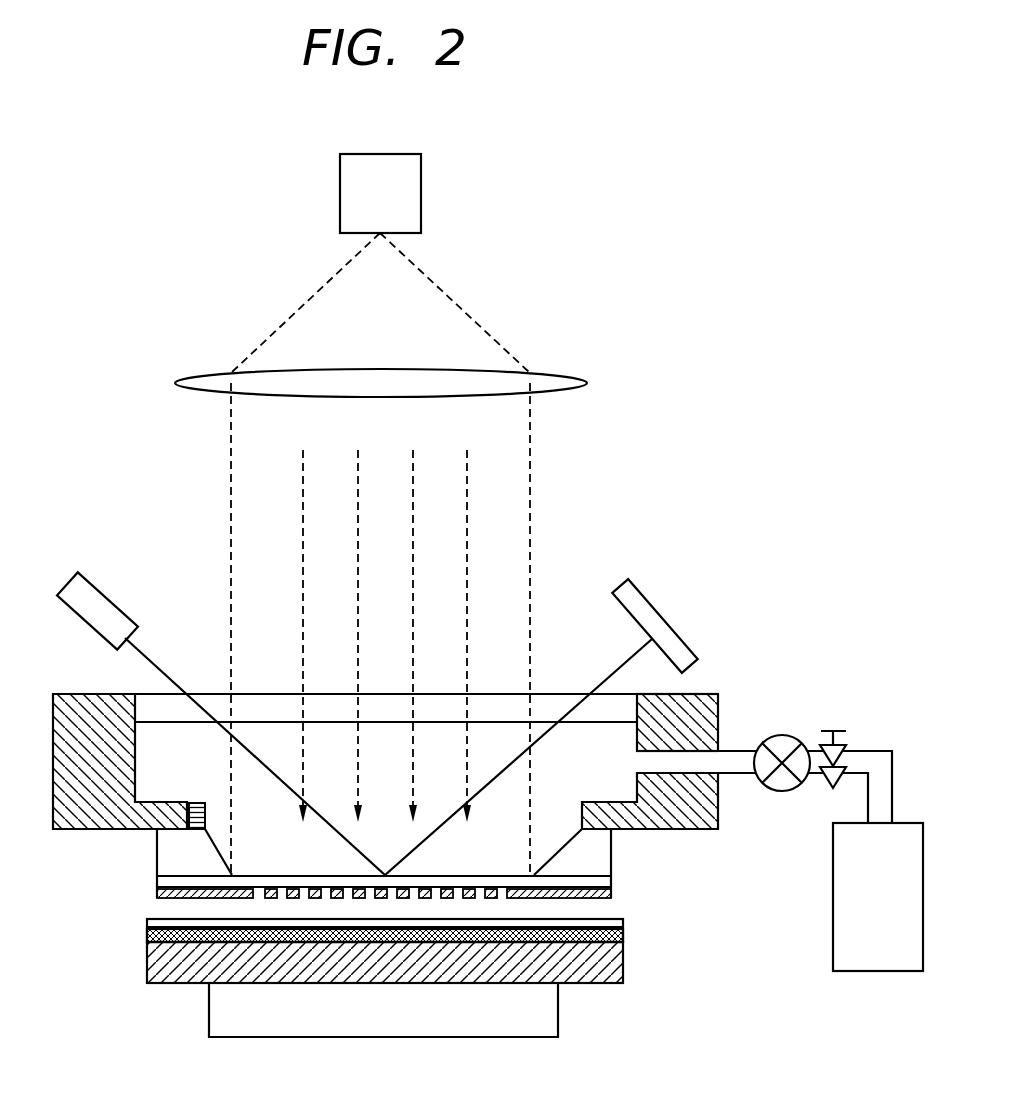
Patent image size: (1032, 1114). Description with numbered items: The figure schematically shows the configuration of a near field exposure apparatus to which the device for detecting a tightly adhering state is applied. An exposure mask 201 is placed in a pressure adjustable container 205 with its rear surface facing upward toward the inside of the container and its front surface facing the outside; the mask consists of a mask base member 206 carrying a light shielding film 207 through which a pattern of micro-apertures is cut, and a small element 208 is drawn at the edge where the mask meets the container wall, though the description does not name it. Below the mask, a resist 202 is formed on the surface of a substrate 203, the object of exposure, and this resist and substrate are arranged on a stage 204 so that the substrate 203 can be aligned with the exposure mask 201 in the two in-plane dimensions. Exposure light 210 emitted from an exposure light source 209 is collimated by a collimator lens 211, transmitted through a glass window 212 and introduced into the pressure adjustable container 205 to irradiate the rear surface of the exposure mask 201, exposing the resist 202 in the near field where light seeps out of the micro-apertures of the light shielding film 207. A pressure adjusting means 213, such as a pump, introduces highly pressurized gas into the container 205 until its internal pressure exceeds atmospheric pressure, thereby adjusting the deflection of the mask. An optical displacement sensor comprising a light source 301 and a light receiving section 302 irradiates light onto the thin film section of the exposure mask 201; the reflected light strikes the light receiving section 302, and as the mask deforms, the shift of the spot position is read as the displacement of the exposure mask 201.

The exposure mask 201 is at (473, 877).
The resist 202 is at (623, 935).
The substrate 203 is at (610, 965).
The stage 204 is at (550, 1013).
The pressure adjustable container 205 is at (706, 711).
The mask base member 206 is at (611, 877).
The light shielding film 207 is at (611, 890).
The seal member 208 is at (198, 822).
The exposure light source 209 is at (380, 193).
The exposure light 210 is at (467, 500).
The collimator lens 211 is at (566, 372).
The glass window 212 is at (264, 694).
The pressure adjusting means 213 is at (875, 957).
The light source 301 is at (88, 592).
The light receiving section 302 is at (655, 608).